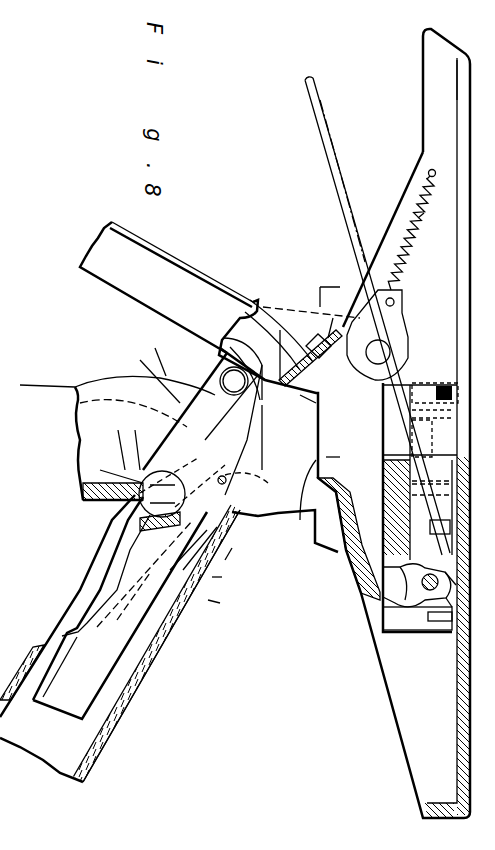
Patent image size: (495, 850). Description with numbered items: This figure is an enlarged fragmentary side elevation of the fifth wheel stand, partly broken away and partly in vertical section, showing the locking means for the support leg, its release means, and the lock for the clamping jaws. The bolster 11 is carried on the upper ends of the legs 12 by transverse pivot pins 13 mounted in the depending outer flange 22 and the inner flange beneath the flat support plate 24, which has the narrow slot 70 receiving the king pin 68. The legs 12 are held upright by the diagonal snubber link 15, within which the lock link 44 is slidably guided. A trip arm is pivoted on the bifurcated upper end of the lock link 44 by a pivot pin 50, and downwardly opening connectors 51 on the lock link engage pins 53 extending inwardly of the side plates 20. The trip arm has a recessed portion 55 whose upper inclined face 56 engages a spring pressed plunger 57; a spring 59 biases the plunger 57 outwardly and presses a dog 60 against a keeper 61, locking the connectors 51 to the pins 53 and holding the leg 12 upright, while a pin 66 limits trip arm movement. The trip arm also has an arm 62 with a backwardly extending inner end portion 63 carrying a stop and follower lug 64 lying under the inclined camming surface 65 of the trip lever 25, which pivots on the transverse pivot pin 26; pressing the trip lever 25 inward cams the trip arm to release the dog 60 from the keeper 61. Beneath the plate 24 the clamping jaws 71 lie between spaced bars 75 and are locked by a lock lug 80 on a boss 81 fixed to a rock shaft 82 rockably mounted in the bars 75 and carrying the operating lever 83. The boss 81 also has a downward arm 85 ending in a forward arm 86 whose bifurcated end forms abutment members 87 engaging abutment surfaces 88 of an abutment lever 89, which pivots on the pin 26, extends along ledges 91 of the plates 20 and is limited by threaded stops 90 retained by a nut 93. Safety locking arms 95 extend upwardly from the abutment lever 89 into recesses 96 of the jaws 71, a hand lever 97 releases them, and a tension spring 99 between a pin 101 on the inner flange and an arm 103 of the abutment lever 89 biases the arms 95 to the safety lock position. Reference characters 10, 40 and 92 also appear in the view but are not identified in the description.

The bar 10 is at (124, 742).
The bolster 11 is at (459, 606).
The legs 12 is at (98, 385).
The pivot pins 13 is at (22, 388).
The diagonal snubber links 15 is at (145, 684).
The side plates 20 is at (7, 507).
The depending outer flange 22 is at (378, 670).
The flat support plate 24 is at (465, 705).
The trip lever 25 is at (170, 252).
The pivot pin 26 is at (9, 258).
The lever 40 is at (270, 434).
The lock link 44 is at (103, 580).
The pivot pin 50 is at (260, 470).
The connectors 51 is at (140, 480).
The pins 53 is at (83, 483).
The recessed portion 55 is at (221, 479).
The upper inclined face 56 is at (240, 552).
The spring pressed plunger 57 is at (227, 577).
The spring 59 is at (224, 603).
The dog 60 is at (110, 501).
The keeper 61 is at (231, 407).
The arm 62 is at (149, 366).
The inner end portion 63 is at (279, 395).
The stop and follower lug 64 is at (220, 376).
The inclined camming surface 65 is at (152, 348).
The pin 66 is at (115, 436).
The king pin 68 is at (133, 436).
The narrow slot 70 is at (458, 430).
The clamping jaws 71 is at (348, 432).
The bars 75 is at (390, 625).
The lock lug 80 is at (460, 502).
The boss 81 is at (432, 612).
The rock shaft 82 is at (448, 582).
The operating lever 83 is at (322, 115).
The arm 85 is at (410, 602).
The arm 86 is at (344, 553).
The abutment members 87 is at (353, 398).
The abutment surfaces 88 is at (315, 400).
The abutment lever 89 is at (289, 328).
The threaded stops 90 is at (297, 310).
The ledges 91 is at (320, 290).
The pivot 92 is at (412, 320).
The nut 93 is at (260, 294).
The safety locking arms 95 is at (435, 348).
The outwardly opening recesses 96 is at (331, 292).
The hand lever 97 is at (414, 277).
The tension spring 99 is at (420, 215).
The pin 101 is at (428, 173).
The arm 103 is at (398, 305).